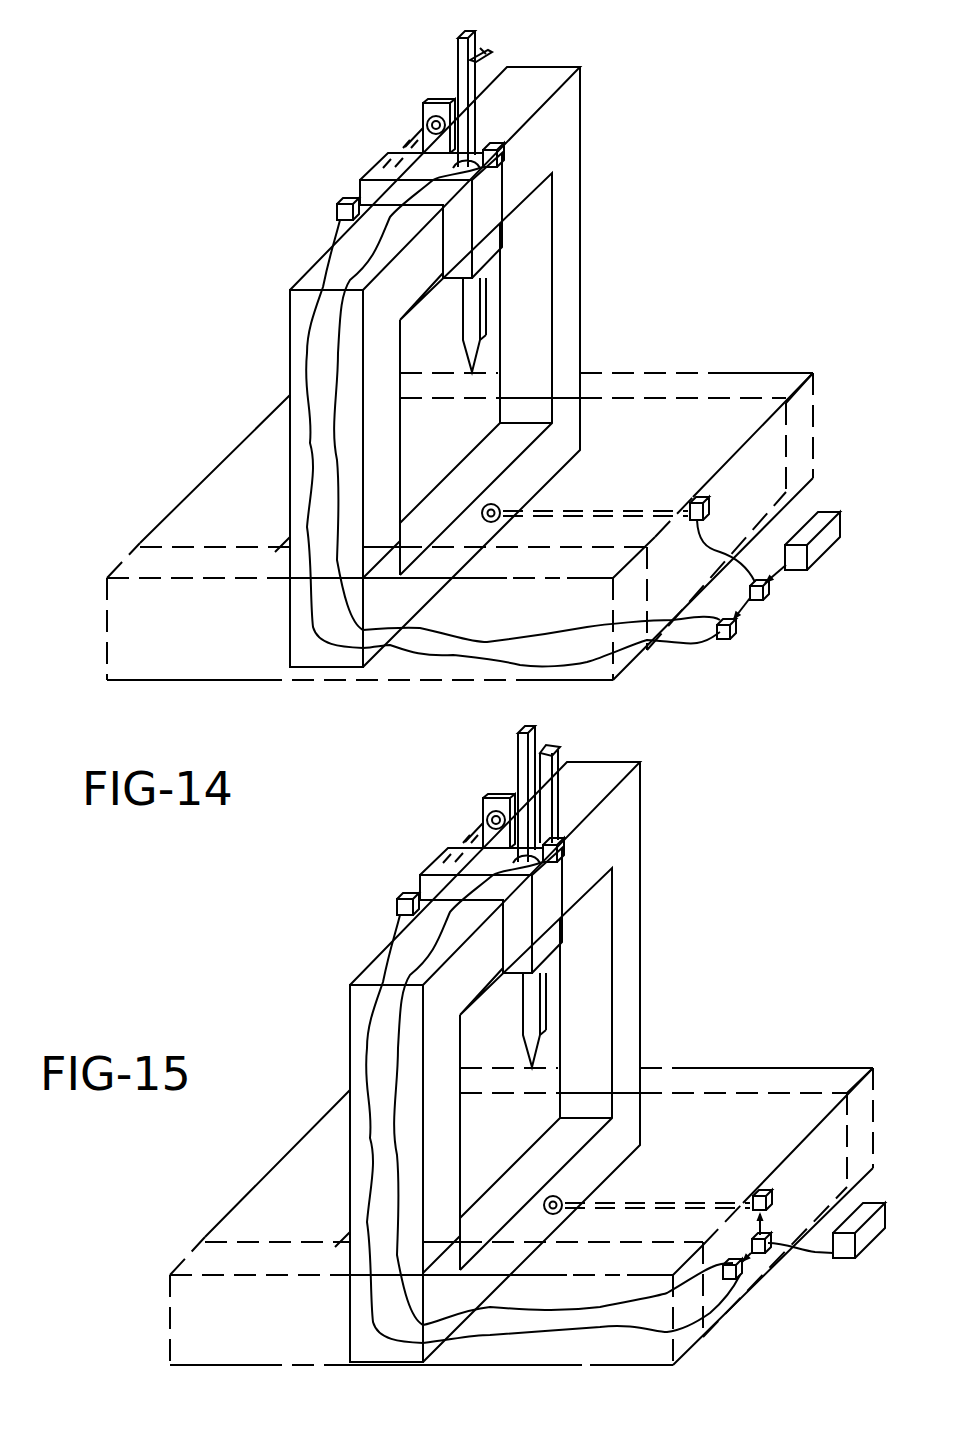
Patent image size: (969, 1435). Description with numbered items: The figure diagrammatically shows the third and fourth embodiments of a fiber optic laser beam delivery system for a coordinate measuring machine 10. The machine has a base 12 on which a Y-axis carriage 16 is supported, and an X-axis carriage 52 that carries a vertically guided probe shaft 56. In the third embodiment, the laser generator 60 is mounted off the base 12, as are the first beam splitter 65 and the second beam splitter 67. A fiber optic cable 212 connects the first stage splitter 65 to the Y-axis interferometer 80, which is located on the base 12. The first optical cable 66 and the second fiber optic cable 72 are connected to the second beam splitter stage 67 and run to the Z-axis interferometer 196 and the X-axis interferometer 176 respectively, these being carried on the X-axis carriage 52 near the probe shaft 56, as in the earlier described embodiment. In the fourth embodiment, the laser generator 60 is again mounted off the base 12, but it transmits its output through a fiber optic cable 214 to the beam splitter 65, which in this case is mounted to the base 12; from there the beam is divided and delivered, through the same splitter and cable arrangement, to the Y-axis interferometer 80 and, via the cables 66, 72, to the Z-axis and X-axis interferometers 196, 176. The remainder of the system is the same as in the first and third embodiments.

In FIG. 14, the coordinate measuring machine 10 is at (460, 526).
In FIG. 15, the coordinate measuring machine 10 is at (521, 1167).
In FIG. 14, the base 12 is at (476, 555).
In FIG. 15, the base 12 is at (505, 1202).
In FIG. 14, the Y-axis carriage 16 is at (388, 367).
In FIG. 15, the Y-axis carriage 16 is at (441, 1062).
In FIG. 15, the X-axis carriage 52 is at (462, 849).
In FIG. 14, the probe shaft 56 is at (558, 313).
In FIG. 15, the probe shaft 56 is at (606, 1018).
In FIG. 14, the laser generator 60 is at (812, 522).
In FIG. 15, the laser generator 60 is at (840, 1199).
In FIG. 14, the first beam splitter 65 is at (781, 607).
In FIG. 15, the first beam splitter 65 is at (766, 1273).
In FIG. 14, the first optical cable 66 is at (541, 626).
In FIG. 15, the first optical cable 66 is at (581, 1295).
In FIG. 14, the second beam splitter 67 is at (749, 653).
In FIG. 14, the second fiber optic cable 72 is at (394, 452).
In FIG. 15, the second fiber optic cable 72 is at (546, 1126).
In FIG. 14, the Y-axis interferometer 80 is at (595, 472).
In FIG. 15, the Y-axis interferometer 80 is at (658, 1165).
In FIG. 14, the X-axis interferometer 176 is at (307, 180).
In FIG. 15, the X-axis interferometer 176 is at (362, 892).
In FIG. 14, the Z-axis interferometer 196 is at (573, 154).
In FIG. 15, the Z-axis interferometer 196 is at (625, 849).
In FIG. 14, the fiber optic cable 212 is at (734, 528).
In FIG. 15, the fiber optic cable 214 is at (817, 1279).